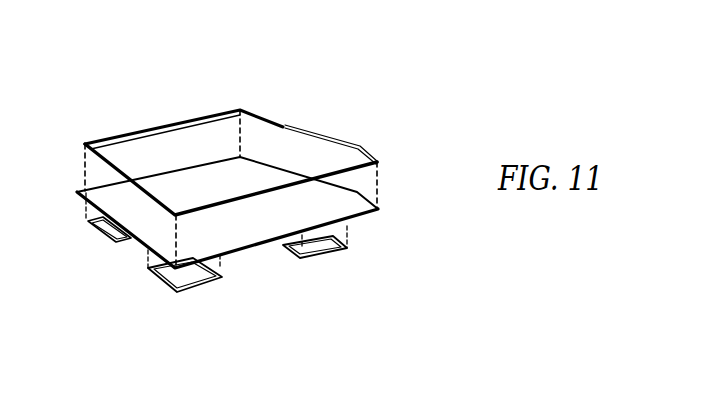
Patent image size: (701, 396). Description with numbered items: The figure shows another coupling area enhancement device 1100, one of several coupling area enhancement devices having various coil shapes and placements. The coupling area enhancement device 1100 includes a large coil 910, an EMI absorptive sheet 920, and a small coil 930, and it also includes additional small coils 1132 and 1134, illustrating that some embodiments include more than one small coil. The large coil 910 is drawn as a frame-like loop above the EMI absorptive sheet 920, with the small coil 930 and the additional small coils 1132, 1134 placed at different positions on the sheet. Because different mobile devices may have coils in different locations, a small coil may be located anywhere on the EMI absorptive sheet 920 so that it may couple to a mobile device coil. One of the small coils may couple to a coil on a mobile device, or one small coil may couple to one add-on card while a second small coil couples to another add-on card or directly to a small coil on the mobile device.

The coupling area enhancement device 1100 is at (396, 92).
The large coil 910 is at (224, 110).
The EMI absorptive sheet 920 is at (380, 210).
The small coil 930 is at (285, 250).
The additional small coil 1132 is at (100, 237).
The additional small coil 1134 is at (158, 279).